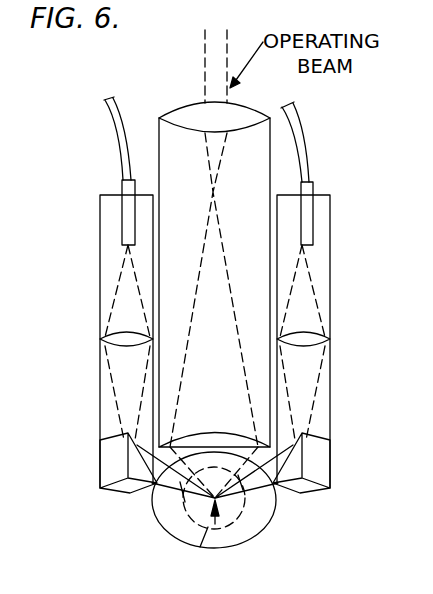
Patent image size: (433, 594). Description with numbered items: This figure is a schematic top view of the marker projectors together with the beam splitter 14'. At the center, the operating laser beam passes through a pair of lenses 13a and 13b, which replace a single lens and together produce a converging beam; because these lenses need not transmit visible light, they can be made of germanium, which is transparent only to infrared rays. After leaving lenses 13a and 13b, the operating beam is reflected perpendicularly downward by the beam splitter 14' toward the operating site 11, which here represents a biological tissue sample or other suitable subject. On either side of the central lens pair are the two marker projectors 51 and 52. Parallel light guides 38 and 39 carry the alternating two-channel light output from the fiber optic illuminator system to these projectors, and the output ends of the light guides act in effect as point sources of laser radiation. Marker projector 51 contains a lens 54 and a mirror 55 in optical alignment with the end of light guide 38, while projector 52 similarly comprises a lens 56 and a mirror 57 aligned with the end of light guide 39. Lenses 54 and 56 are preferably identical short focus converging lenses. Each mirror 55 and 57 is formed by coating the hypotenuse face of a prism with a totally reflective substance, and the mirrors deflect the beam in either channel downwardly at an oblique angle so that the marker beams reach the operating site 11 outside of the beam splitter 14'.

The lens 13a is at (199, 108).
The lens 13b is at (183, 437).
The light guide 38 is at (122, 153).
The light guide 39 is at (308, 157).
The marker projector 51 is at (100, 247).
The marker projector 52 is at (333, 275).
The lens 54 is at (120, 345).
The lens 56 is at (313, 345).
The mirror 55 is at (107, 460).
The mirror 57 is at (322, 458).
The operating site 11 is at (200, 547).
The beam splitter 14' is at (228, 505).